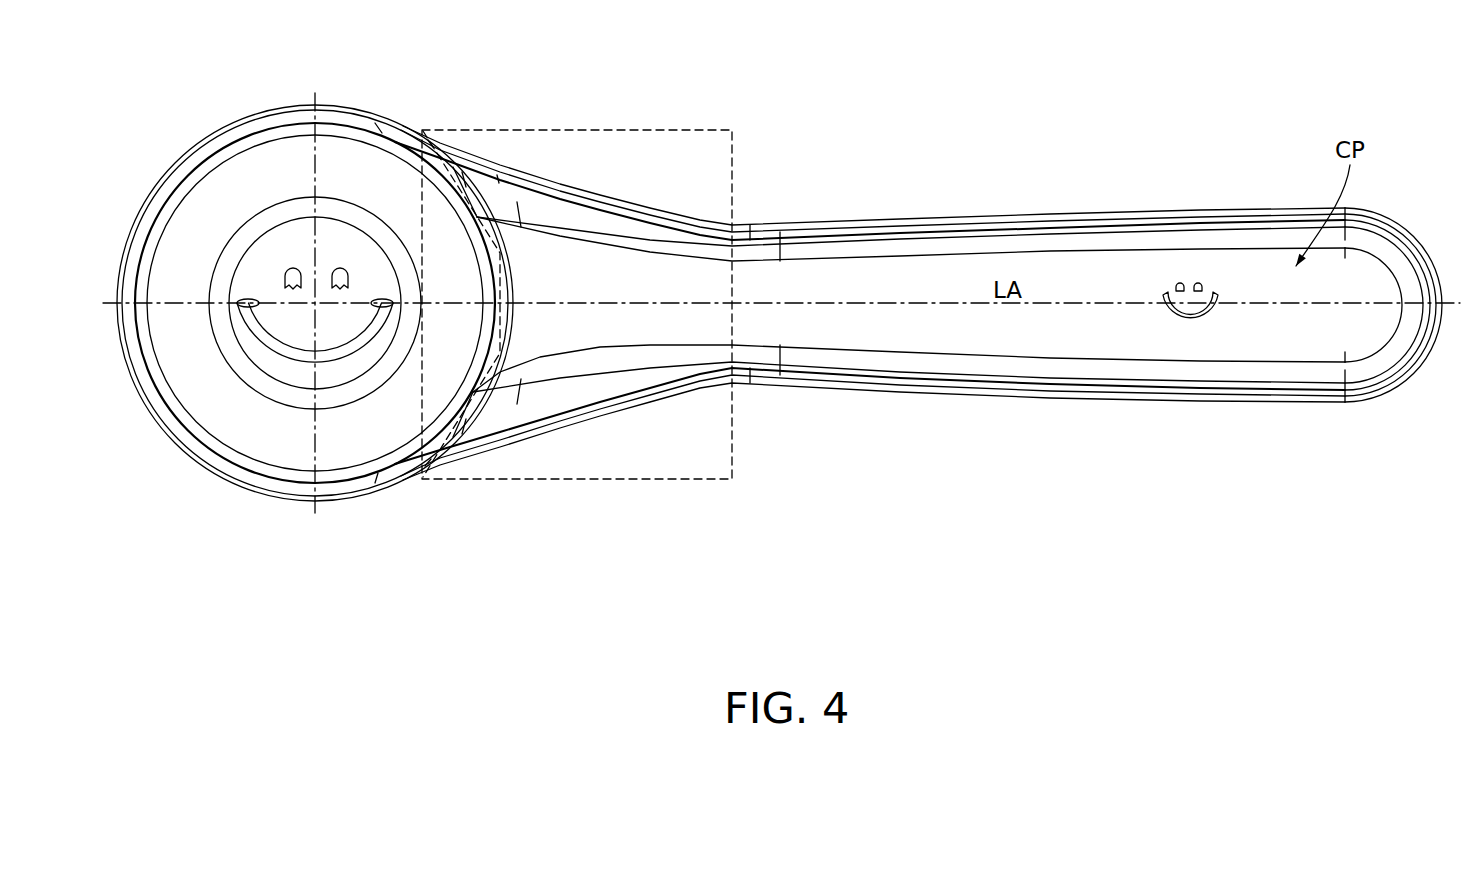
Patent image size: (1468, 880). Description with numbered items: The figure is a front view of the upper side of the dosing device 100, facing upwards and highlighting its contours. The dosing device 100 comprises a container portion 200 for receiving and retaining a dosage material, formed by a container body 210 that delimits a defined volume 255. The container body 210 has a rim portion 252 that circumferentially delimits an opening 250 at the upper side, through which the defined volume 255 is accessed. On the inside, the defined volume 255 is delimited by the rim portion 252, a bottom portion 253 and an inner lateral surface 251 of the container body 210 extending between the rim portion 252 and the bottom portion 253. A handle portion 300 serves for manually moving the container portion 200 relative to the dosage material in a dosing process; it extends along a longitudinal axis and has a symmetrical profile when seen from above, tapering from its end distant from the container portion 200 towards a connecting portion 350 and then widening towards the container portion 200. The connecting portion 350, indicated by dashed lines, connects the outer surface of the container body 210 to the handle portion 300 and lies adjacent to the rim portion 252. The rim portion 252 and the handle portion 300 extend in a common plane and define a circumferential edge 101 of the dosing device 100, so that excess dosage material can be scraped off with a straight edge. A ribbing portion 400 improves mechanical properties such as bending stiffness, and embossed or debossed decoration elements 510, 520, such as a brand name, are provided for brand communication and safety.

The dosing device 100 is at (1206, 92).
The circumferential edge 101 is at (181, 181).
The container portion 200 is at (197, 114).
The container body 210 is at (392, 127).
The opening 250 is at (193, 371).
The inner lateral surface 251 is at (210, 407).
The rim portion 252 is at (270, 485).
The bottom portion 253 is at (387, 368).
The defined volume 255 is at (366, 257).
The handle portion 300 is at (902, 285).
The connecting portion 350 is at (667, 112).
The ribbing portion 400 is at (241, 127).
The decoration element 510 is at (328, 362).
The decoration element 520 is at (1302, 318).